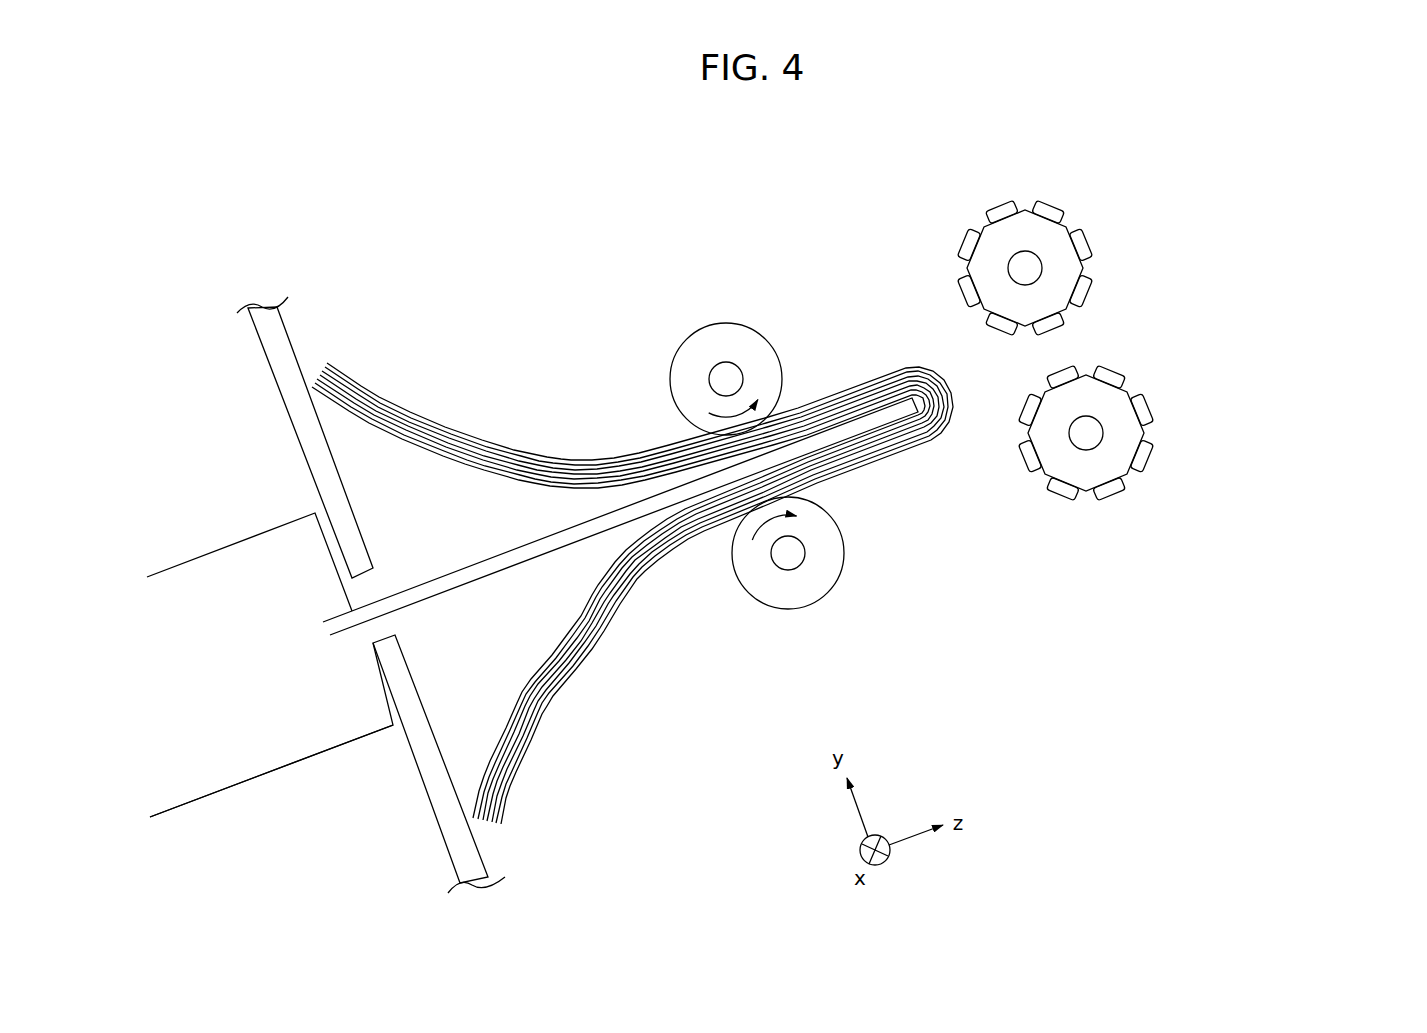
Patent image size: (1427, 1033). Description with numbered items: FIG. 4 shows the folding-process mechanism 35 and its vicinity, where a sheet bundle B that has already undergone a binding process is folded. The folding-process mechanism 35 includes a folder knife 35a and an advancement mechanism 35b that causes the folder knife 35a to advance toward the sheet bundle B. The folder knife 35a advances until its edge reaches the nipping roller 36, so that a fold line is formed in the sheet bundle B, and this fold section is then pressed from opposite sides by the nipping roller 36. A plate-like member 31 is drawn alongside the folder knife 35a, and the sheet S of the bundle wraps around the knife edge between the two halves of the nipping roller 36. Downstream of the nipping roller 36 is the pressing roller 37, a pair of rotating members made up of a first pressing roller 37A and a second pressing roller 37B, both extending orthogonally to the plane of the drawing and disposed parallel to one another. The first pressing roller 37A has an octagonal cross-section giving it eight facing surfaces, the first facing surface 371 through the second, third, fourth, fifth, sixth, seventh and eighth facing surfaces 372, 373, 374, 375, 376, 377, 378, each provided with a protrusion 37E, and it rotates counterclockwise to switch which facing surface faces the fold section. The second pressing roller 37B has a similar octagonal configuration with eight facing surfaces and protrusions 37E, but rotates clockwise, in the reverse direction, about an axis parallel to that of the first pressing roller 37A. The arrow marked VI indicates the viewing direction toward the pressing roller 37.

The platen / support plate 31 is at (265, 373).
The folding-process mechanism 35 is at (532, 659).
The folder knife 35a is at (452, 592).
The advancement mechanism 35b is at (181, 812).
The nipping roller 36 is at (733, 540).
The pressing roller 37 is at (1118, 323).
The first pressing roller 37A is at (1090, 268).
The second pressing roller 37B is at (1187, 398).
The first facing surface 371 is at (1027, 331).
The second facing surface 372 is at (983, 315).
The third facing surface 373 is at (962, 270).
The fourth facing surface 374 is at (979, 222).
The fifth facing surface 375 is at (1018, 200).
The sixth facing surface 376 is at (1063, 214).
The seventh facing surface 377 is at (1090, 256).
The eighth facing surface 378 is at (1082, 312).
The protrusion 37E is at (1060, 332).
The sheet / medium S is at (510, 788).
The sheet bundle B is at (570, 699).
The view direction VI is at (1312, 246).